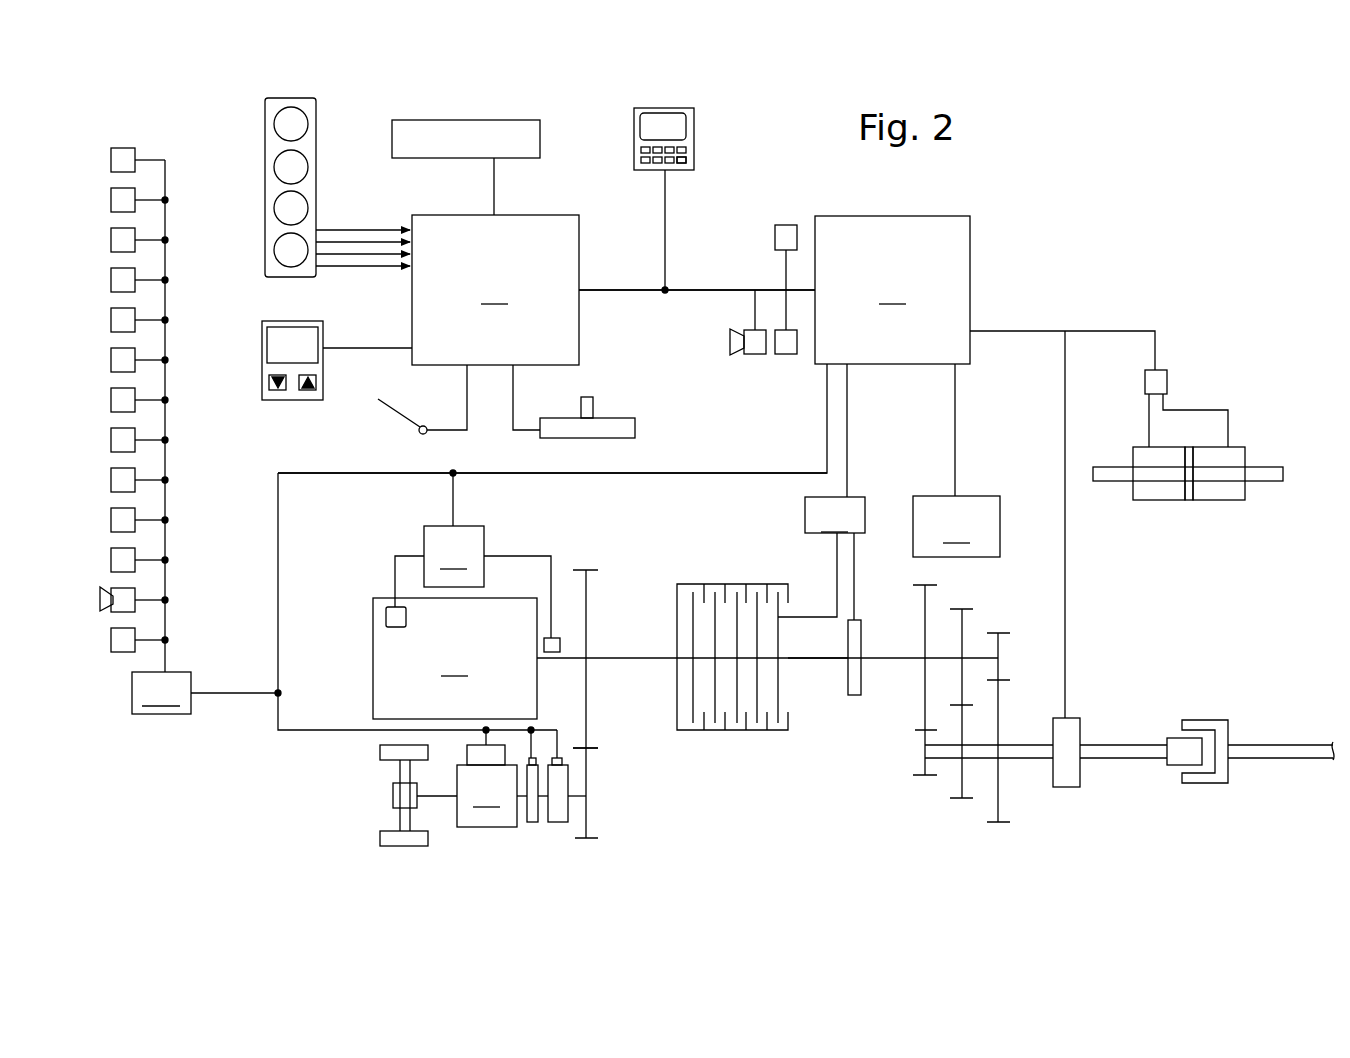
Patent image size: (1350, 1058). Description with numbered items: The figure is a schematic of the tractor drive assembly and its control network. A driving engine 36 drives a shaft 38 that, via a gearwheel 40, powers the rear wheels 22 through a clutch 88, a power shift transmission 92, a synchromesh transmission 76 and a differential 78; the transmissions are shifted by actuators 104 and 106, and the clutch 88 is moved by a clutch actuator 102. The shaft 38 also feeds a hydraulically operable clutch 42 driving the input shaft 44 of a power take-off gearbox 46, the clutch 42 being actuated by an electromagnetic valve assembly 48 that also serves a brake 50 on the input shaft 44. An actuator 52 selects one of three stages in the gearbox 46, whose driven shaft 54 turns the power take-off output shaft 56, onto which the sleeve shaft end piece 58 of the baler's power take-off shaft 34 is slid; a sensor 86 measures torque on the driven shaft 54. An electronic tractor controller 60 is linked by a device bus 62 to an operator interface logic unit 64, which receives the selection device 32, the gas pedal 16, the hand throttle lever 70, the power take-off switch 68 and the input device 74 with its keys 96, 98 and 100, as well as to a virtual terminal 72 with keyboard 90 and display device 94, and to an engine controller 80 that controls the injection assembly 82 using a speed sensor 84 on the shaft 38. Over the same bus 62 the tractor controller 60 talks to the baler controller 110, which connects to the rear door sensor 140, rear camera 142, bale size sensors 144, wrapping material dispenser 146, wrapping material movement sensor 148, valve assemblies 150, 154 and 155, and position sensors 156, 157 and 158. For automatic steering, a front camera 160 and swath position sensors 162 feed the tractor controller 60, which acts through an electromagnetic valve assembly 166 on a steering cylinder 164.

The gas pedal 16 is at (396, 410).
The rear wheels 22 is at (380, 752).
The selection device 32 is at (316, 152).
The power take-off shaft 34 is at (1307, 750).
The driving engine 36 is at (455, 658).
The shaft 38 is at (565, 657).
The gearwheel 40 is at (587, 710).
The hydraulically operable clutch 42 is at (738, 731).
The input shaft 44 is at (808, 659).
The power take-off gearbox 46 is at (1040, 664).
The electromagnetic valve assembly 48 is at (835, 515).
The brake 50 is at (856, 695).
The actuator 52 is at (956, 526).
The driven shaft 54 is at (1025, 752).
The power take-off output shaft 56 is at (1178, 745).
The sleeve shaft end piece 58 is at (1203, 723).
The electronic tractor controller 60 is at (892, 290).
The device bus 62 is at (705, 291).
The operator interface logic unit 64 is at (495, 290).
The power take-off switch 68 is at (540, 140).
The hand throttle lever 70 is at (614, 426).
The virtual terminal 72 is at (694, 128).
The input device 74 is at (262, 366).
The synchromesh transmission 76 is at (492, 796).
The differential 78 is at (393, 790).
The engine controller 80 is at (473, 582).
The injection assembly 82 is at (386, 617).
The speed sensor 84 is at (553, 652).
The sensor 86 is at (1075, 728).
The clutch 88 is at (533, 822).
The keyboard 90 is at (682, 165).
The power shift transmission 92 is at (558, 822).
The display device 94 is at (665, 122).
The first key 96 is at (272, 343).
The key 98 is at (273, 390).
The key 100 is at (305, 390).
The clutch actuator 102 is at (528, 790).
The actuator 104 is at (562, 761).
The actuator 106 is at (478, 752).
The baler controller 110 is at (206, 693).
The rear door sensor 140 is at (111, 640).
The rear camera 142 is at (118, 606).
The bale size sensors 144 is at (111, 480).
The wrapping material dispenser 146 is at (111, 440).
The wrapping material movement sensor 148 is at (111, 400).
The electromagnetic valve assembly 150 is at (111, 360).
The electromagnetic valve assembly 154 is at (111, 320).
The valve assembly 155 is at (111, 160).
The sensor 156 is at (111, 280).
The sensor 157 is at (111, 200).
The sensor 158 is at (111, 240).
The camera 160 is at (755, 354).
The swath position sensors 162 is at (786, 225).
The steering cylinder 164 is at (1162, 500).
The electromagnetic valve assembly 166 is at (1167, 381).